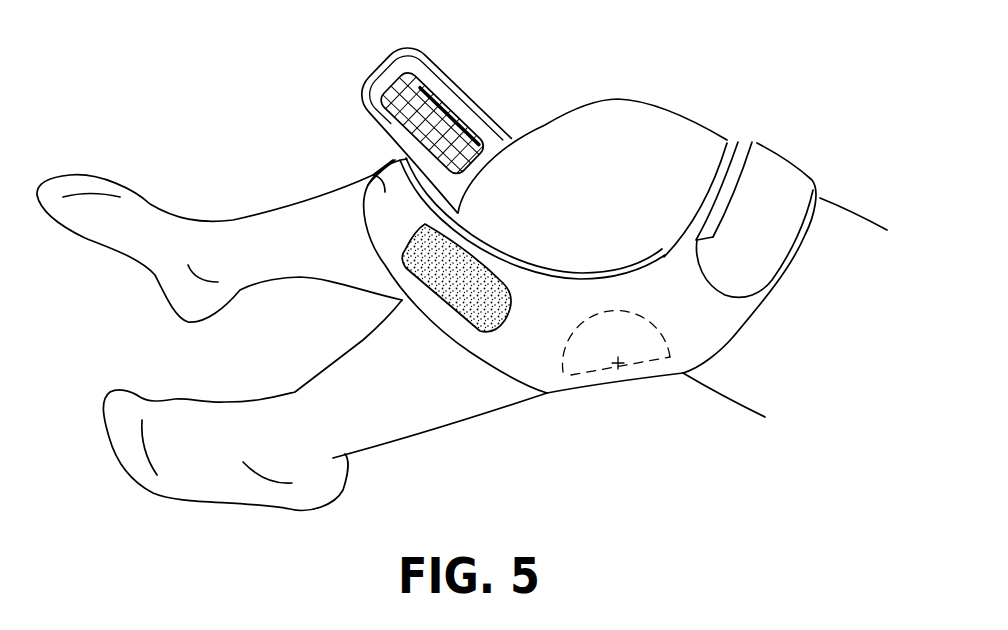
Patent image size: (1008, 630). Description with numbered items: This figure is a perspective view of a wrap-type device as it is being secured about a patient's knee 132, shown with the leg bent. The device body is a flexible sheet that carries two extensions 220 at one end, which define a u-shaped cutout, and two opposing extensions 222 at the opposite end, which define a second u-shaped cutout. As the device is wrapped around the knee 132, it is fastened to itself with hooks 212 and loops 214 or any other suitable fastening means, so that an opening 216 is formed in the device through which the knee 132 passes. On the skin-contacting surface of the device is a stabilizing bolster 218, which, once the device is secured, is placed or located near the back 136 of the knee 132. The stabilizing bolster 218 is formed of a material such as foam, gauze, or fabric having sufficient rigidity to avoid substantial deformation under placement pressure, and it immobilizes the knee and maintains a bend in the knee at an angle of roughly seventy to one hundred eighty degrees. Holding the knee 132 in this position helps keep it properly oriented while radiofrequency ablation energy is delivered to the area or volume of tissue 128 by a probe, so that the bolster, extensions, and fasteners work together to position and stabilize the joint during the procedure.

The area or volume of tissue 128 is at (605, 178).
The knee 132 is at (641, 100).
The back of the knee 136 is at (687, 373).
The hooks 212 is at (440, 91).
The loops 214 is at (465, 303).
The opening 216 is at (707, 147).
The stabilizing bolster 218 is at (627, 377).
The extensions 220 is at (378, 68).
The opposing extensions 222 is at (373, 175).